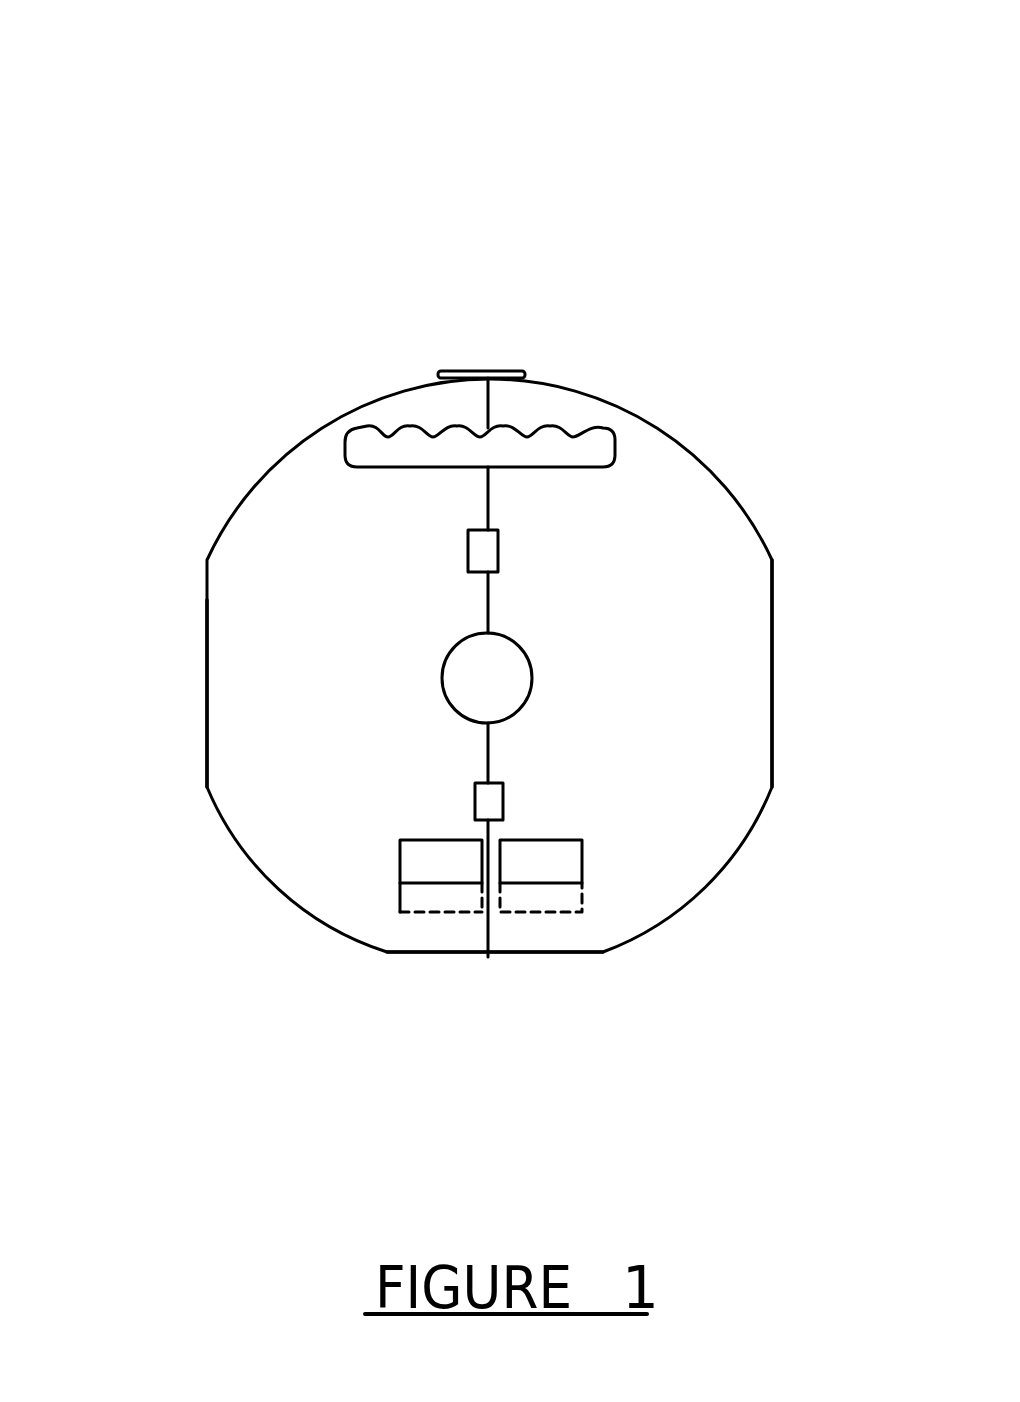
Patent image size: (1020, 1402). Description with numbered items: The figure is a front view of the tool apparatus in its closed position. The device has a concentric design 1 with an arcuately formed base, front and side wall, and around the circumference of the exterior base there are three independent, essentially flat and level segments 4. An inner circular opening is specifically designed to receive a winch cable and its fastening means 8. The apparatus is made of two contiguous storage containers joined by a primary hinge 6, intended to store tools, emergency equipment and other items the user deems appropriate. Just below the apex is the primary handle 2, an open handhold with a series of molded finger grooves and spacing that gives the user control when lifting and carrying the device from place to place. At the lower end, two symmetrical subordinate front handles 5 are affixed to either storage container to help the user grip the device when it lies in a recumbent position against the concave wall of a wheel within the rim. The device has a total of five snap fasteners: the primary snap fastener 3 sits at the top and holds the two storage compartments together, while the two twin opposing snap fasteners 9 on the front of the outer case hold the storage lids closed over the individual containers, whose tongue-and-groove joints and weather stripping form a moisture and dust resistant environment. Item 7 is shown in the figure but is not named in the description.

The concentric design 1 is at (419, 587).
The primary handle 2 is at (506, 233).
The primary snap fastener 3 is at (620, 244).
The flat and level segments 4 is at (565, 591).
The subordinate front handles 5 is at (581, 944).
The primary hinge 6 is at (408, 790).
The wires 7 is at (390, 818).
The winch cable fastening means 8 is at (318, 754).
The twin opposing snap fasteners 9 is at (298, 675).